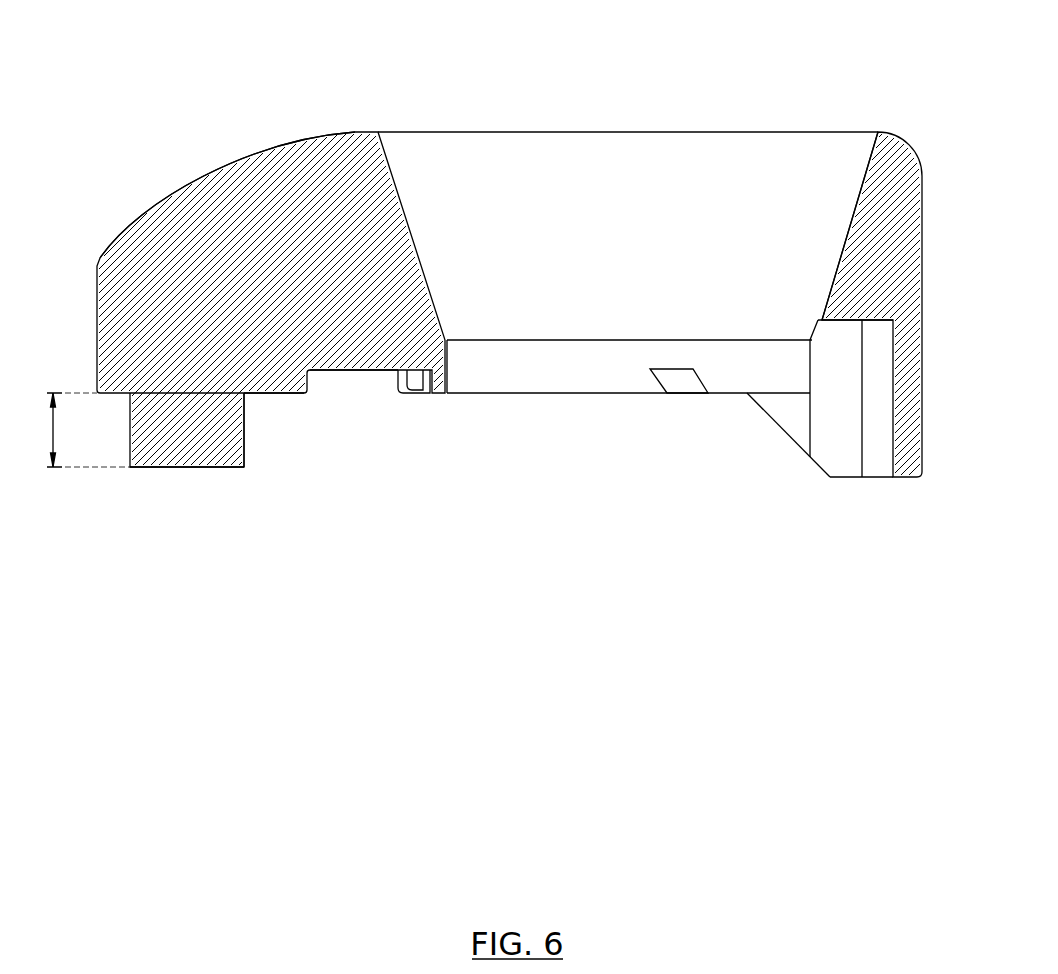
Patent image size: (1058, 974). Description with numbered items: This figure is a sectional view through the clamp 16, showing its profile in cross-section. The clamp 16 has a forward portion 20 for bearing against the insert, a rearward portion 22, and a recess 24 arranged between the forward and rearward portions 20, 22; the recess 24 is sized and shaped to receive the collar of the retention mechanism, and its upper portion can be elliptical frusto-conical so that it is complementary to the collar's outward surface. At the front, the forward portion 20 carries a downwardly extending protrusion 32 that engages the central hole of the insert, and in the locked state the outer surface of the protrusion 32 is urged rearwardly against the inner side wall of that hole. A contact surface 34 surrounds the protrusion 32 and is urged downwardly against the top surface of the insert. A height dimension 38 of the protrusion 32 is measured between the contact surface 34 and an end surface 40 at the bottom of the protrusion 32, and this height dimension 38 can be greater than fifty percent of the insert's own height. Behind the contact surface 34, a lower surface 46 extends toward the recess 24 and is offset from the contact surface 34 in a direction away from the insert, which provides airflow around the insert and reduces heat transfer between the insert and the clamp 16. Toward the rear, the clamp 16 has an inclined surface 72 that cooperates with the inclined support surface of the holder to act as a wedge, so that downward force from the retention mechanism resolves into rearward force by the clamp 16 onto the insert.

The forward portion 20 is at (127, 203).
The clamp 16 is at (197, 172).
The recess 24 is at (853, 210).
The rearward portion 22 is at (940, 325).
The inclined surface 72 is at (788, 440).
The lower surface 46 is at (328, 371).
The contact surface 34 is at (270, 393).
The protrusion 32 is at (244, 447).
The end surface 40 is at (172, 467).
The height dimension 38 is at (77, 430).